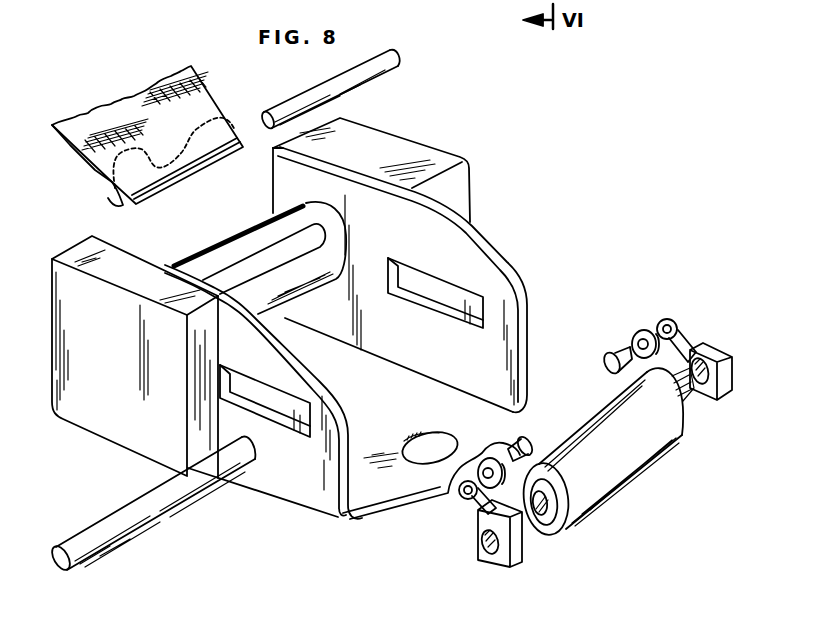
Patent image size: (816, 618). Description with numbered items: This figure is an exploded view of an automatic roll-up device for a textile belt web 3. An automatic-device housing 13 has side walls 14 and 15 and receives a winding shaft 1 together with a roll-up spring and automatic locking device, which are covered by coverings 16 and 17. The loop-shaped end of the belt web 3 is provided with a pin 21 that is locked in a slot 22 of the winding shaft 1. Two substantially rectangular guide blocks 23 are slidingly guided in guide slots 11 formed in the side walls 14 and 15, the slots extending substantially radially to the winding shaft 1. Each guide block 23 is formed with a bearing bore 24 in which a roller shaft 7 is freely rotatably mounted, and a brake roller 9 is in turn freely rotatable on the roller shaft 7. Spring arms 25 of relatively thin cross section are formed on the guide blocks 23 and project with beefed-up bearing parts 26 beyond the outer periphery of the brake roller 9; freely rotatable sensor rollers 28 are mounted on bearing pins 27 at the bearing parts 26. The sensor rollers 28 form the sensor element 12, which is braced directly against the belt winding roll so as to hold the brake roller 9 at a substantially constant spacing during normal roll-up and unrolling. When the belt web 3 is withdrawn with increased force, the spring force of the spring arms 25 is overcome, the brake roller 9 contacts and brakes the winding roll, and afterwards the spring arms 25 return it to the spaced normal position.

The winding shaft 1 is at (223, 263).
The belt web 3 is at (205, 100).
The roller shaft 7 is at (90, 543).
The brake roller 9 is at (617, 467).
The guide slot 11 is at (484, 300).
The sensor element 12 is at (660, 318).
The automatic-device housing 13 is at (280, 512).
The side wall 14 is at (323, 505).
The side wall 15 is at (517, 353).
The covering 16 is at (73, 335).
The covering 17 is at (407, 150).
The pin 21 is at (303, 105).
The slot 22 is at (265, 263).
The guide block 23 is at (700, 390).
The bearing bore 24 is at (695, 370).
The spring arm 25 is at (681, 343).
The bearing part 26 is at (673, 330).
The bearing pin 27 is at (613, 361).
The sensor roller 28 is at (642, 328).